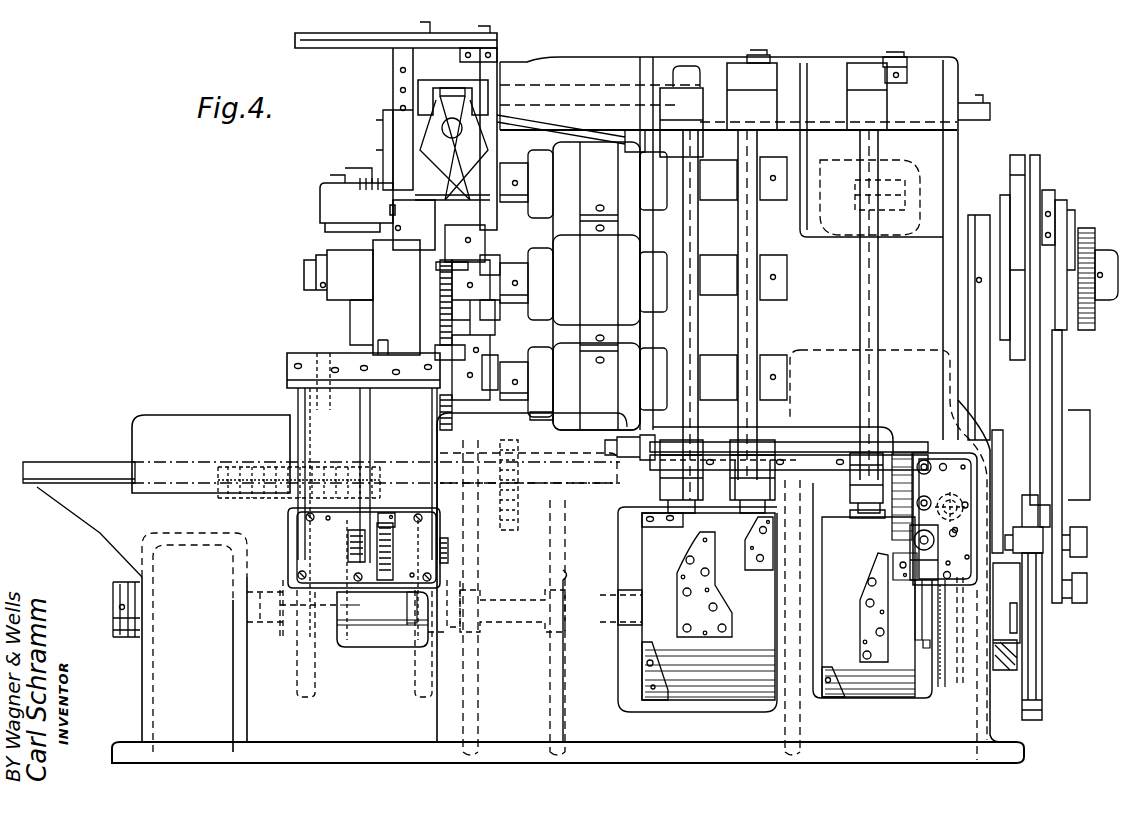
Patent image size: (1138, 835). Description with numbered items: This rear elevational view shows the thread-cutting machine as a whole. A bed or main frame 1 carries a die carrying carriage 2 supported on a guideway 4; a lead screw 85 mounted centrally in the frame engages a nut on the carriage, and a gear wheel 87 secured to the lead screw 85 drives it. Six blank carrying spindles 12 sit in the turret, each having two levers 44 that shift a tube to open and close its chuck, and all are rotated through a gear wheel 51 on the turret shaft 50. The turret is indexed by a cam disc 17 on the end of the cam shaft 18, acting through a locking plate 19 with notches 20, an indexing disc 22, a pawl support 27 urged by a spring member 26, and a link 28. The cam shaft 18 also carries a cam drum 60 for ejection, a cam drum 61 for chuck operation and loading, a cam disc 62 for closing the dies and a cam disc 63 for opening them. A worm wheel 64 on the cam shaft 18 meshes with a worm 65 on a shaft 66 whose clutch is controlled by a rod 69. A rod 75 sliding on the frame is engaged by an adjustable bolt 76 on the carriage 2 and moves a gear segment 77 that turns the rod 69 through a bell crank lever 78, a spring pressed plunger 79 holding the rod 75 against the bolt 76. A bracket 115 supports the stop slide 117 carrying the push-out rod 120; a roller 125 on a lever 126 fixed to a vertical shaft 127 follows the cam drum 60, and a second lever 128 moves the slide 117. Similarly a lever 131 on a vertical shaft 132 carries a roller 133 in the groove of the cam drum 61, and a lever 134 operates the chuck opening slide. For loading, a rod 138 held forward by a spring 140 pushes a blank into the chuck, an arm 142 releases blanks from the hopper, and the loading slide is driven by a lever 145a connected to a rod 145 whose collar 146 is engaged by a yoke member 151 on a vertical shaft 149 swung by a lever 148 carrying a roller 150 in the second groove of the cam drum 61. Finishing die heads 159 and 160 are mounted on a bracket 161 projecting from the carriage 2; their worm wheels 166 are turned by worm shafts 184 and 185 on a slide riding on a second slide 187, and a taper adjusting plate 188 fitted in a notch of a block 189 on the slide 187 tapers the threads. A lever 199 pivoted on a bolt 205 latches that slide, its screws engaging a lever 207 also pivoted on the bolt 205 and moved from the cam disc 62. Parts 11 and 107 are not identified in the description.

The bed or main frame 1 is at (146, 666).
The carriage 2 is at (162, 415).
The guideway 4 is at (80, 478).
The frame plate 11 is at (980, 215).
The blank carrying spindle 12 is at (512, 262).
The cam disc 17 is at (1040, 683).
The cam shaft 18 is at (510, 632).
The locking plate 19 is at (1017, 155).
The notch 20 is at (1012, 172).
The indexing disc 22 is at (1036, 155).
The spring member 26 is at (1052, 190).
The pawl support 27 is at (1065, 222).
The link 28 is at (1062, 368).
The lever 44 is at (728, 262).
The turret shaft 50 is at (1108, 302).
The gear wheel 51 is at (1086, 230).
The cam drum 60 is at (900, 700).
The cam drum 61 is at (710, 700).
The cam disc 62 is at (432, 700).
The cam disc 63 is at (296, 668).
The worm wheel 64 is at (940, 680).
The worm 65 is at (968, 488).
The shaft 66 is at (970, 510).
The rod 69 is at (912, 540).
The rod 75 is at (806, 442).
The adjustable bolt 76 is at (618, 446).
The gear segment 77 is at (932, 462).
The bell crank lever 78 is at (895, 558).
The spring pressed plunger 79 is at (895, 515).
The lead screw 85 is at (236, 468).
The gear wheel 87 is at (508, 535).
The lever 107 is at (1035, 535).
The bracket 115 is at (950, 164).
The stop slide 117 is at (992, 108).
The push-out rod 120 is at (867, 188).
The roller 125 is at (858, 512).
The lever 126 is at (850, 492).
The vertical shaft 127 is at (878, 322).
The lever 128 is at (888, 60).
The lever 131 is at (744, 508).
The vertical shaft 132 is at (757, 338).
The roller 133 is at (748, 535).
The lever 134 is at (770, 68).
The rod 138 is at (333, 183).
The spring 140 is at (372, 178).
The arm 142 is at (384, 135).
The rod 145 is at (540, 62).
The lever 145a is at (468, 158).
The collar 146 is at (703, 68).
The lever 148 is at (613, 502).
The vertical shaft 149 is at (690, 330).
The roller 150 is at (697, 515).
The yoke member 151 is at (683, 72).
The finishing die head 159 is at (462, 235).
The finishing die head 160 is at (470, 328).
The bracket 161 is at (400, 322).
The worm wheel 166 is at (445, 226).
The worm shaft 184 is at (440, 300).
The worm shaft 185 is at (440, 410).
The slide 187 is at (380, 266).
The taper adjusting plate 188 is at (288, 358).
The block 189 is at (410, 355).
The lever 199 is at (365, 540).
The bolt 205 is at (450, 556).
The lever 207 is at (410, 590).